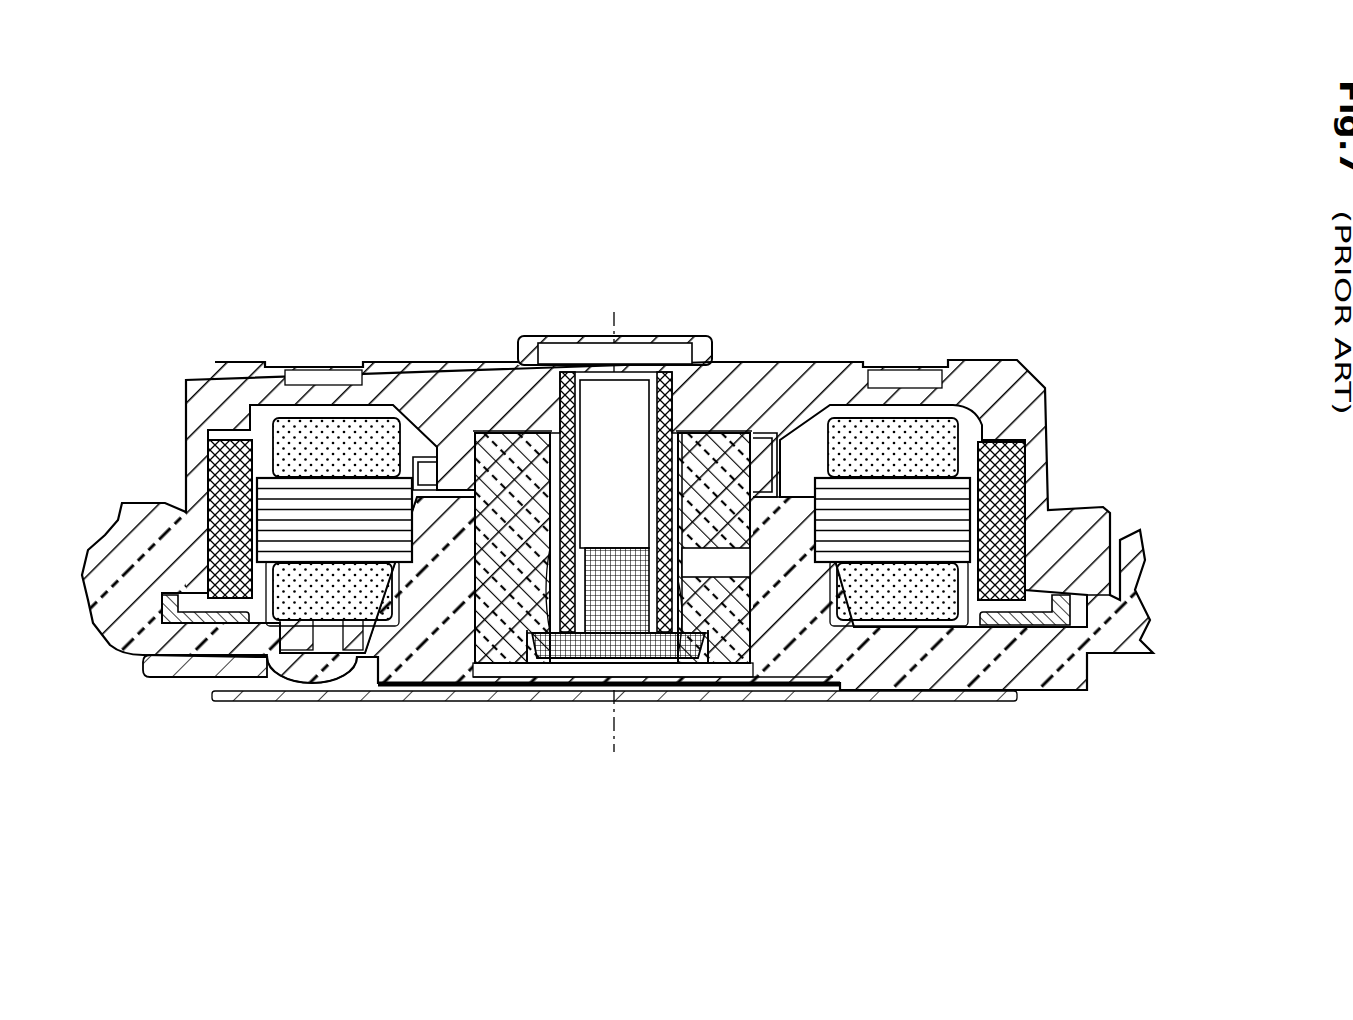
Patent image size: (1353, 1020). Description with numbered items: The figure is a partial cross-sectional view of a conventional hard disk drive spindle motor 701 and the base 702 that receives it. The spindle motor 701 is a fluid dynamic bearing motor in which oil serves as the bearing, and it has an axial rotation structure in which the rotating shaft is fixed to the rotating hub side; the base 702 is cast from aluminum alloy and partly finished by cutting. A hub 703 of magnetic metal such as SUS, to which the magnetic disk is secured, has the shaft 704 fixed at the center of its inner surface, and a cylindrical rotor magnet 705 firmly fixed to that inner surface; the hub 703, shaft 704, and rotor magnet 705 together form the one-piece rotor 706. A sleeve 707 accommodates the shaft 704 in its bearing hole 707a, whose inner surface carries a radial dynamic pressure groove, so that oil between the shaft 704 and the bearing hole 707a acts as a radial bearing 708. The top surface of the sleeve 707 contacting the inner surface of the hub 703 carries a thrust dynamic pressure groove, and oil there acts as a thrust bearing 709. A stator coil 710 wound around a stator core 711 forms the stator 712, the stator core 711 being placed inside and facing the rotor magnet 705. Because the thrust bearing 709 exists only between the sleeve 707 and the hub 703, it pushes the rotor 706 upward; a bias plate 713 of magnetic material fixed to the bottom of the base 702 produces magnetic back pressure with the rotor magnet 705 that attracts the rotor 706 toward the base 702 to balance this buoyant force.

The spindle motor 701 is at (119, 403).
The base 702 is at (1112, 632).
The hub 703 is at (826, 372).
The rotating shaft 704 is at (671, 420).
The rotor magnet 705 is at (985, 442).
The rotor 706 is at (881, 314).
The sleeve 707 is at (503, 640).
The bearing hole 707a is at (690, 608).
The radial bearing 708 is at (569, 646).
The thrust bearing 709 is at (520, 431).
The stator coil 710 is at (897, 617).
The stator core 711 is at (928, 545).
The stator 712 is at (1008, 740).
The bias plate 713 is at (200, 630).